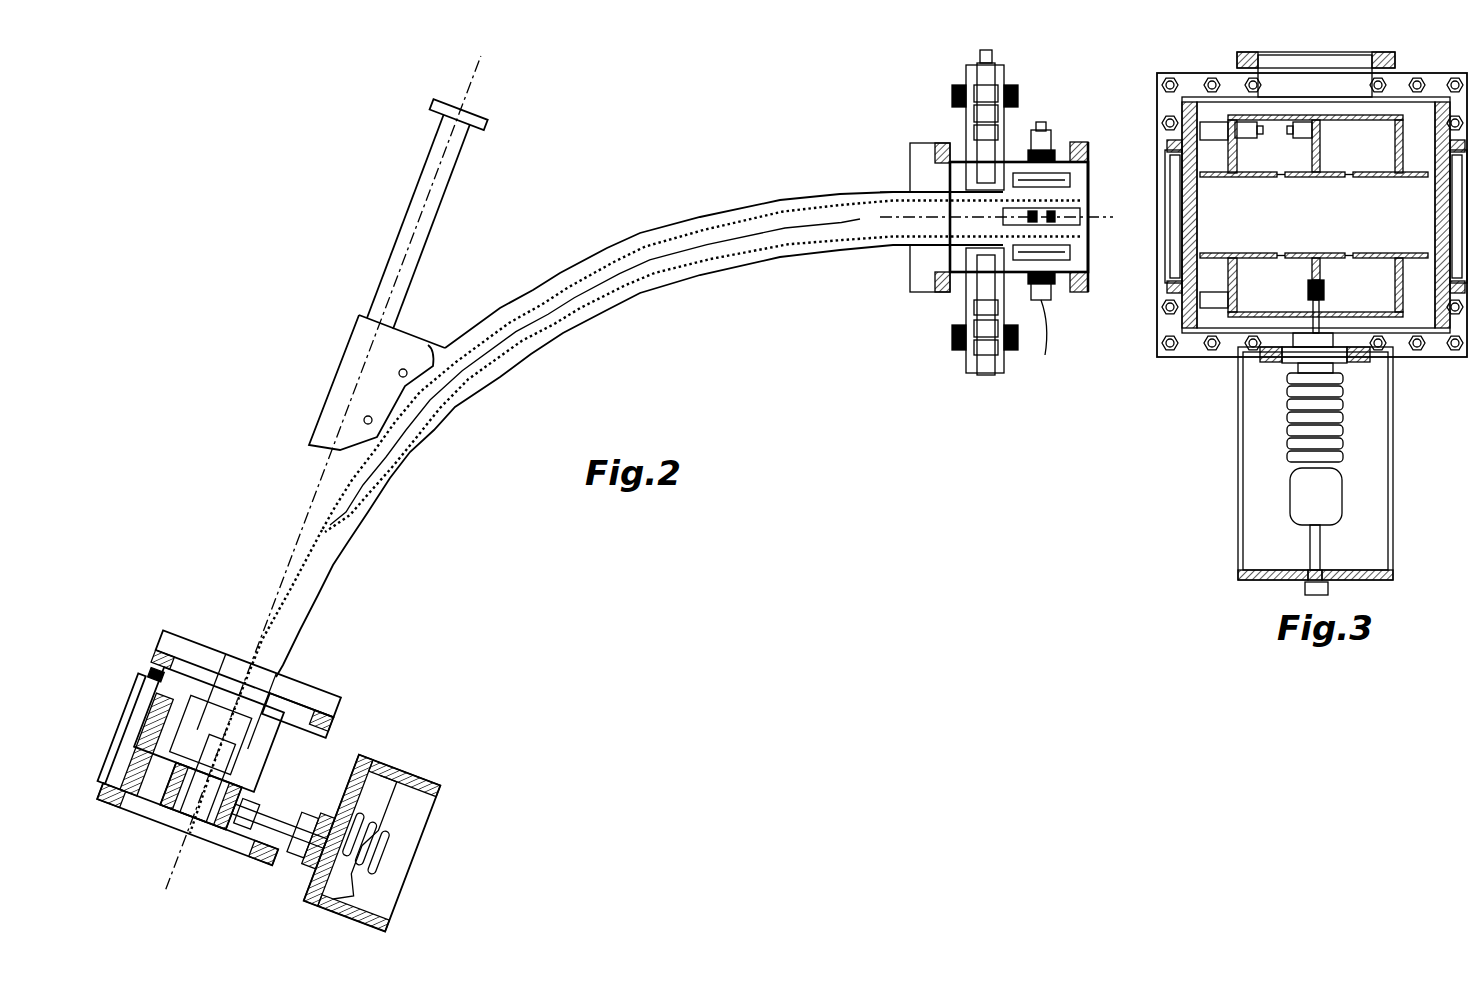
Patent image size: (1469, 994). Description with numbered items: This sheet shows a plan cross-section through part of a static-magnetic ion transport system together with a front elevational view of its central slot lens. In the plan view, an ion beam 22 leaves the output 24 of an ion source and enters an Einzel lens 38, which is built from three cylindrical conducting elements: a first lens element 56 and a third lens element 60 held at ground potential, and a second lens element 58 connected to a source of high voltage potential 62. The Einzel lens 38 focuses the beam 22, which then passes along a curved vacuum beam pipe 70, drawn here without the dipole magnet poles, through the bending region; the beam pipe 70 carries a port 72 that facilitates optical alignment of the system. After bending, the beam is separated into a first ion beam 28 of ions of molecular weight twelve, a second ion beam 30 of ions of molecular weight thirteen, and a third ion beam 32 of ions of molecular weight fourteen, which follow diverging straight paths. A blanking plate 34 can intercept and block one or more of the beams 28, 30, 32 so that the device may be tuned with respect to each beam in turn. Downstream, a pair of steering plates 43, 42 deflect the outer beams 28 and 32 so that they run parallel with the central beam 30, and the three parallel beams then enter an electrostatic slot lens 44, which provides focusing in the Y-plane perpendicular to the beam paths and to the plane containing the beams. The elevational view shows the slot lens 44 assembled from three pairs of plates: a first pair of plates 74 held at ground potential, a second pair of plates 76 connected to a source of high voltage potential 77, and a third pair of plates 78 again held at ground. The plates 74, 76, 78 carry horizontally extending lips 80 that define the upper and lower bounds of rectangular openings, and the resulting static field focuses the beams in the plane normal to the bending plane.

In FIG. 2, the ion beam 22 is at (226, 654).
In FIG. 2, the output of an ion source 24 is at (183, 835).
In FIG. 2, the first ion beam 28 is at (814, 243).
In FIG. 2, the second ion beam 30 is at (856, 221).
In FIG. 2, the third ion beam 32 is at (873, 200).
In FIG. 2, the blanking plate 34 is at (983, 63).
In FIG. 2, the Einzel lens 38 is at (145, 733).
In FIG. 2, the steering plate 42 is at (1062, 193).
In FIG. 2, the steering plate 43 is at (1060, 243).
In FIG. 3, the electrostatic slot lens 44 is at (1183, 405).
In FIG. 2, the first lens element 56 is at (223, 843).
In FIG. 2, the second lens element 58 is at (250, 770).
In FIG. 2, the third lens element 60 is at (277, 718).
In FIG. 2, the source of high voltage potential 62 is at (298, 850).
In FIG. 2, the vacuum beam pipe 70 is at (523, 357).
In FIG. 2, the port 72 is at (415, 192).
In FIG. 3, the first pair of plates 74 is at (1248, 177).
In FIG. 3, the second pair of plates 76 is at (1313, 177).
In FIG. 3, the source of high voltage potential 77 is at (1317, 547).
In FIG. 3, the third pair of plates 78 is at (1400, 177).
In FIG. 3, the horizontally extending lips 80 is at (1372, 172).